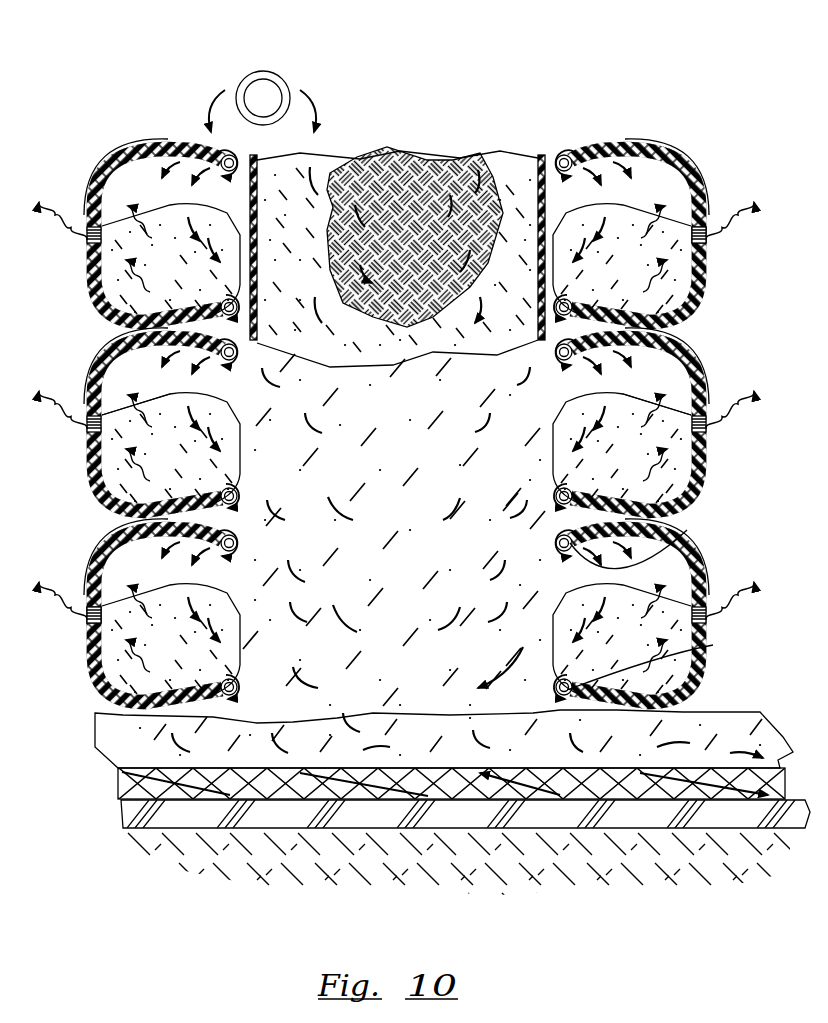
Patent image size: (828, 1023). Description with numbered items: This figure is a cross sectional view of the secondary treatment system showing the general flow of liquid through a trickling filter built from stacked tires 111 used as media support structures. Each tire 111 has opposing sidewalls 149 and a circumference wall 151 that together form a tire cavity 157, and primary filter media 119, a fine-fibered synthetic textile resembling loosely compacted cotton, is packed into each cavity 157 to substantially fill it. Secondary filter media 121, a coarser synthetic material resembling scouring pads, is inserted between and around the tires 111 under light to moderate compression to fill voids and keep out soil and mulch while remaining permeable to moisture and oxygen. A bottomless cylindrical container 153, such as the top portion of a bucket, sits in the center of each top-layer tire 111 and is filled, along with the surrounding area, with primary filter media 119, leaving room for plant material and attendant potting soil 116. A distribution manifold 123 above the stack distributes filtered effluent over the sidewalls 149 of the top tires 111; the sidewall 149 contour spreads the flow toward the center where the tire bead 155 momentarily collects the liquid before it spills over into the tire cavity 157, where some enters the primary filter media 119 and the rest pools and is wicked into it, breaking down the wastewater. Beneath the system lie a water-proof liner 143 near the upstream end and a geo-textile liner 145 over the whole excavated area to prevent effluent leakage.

The tire 111 is at (712, 463).
The potting soil 116 is at (392, 143).
The primary filter media 119 is at (405, 374).
The secondary filter media 121 is at (123, 753).
The distribution manifold 123 is at (277, 72).
The water-proof liner 143 is at (463, 820).
The geo-textile liner 145 is at (593, 800).
The sidewall 149 is at (640, 140).
The circumference wall 151 is at (703, 168).
The bottomless cylindrical container 153 is at (545, 160).
The tire bead 155 is at (687, 530).
The tire cavity 157 is at (396, 386).